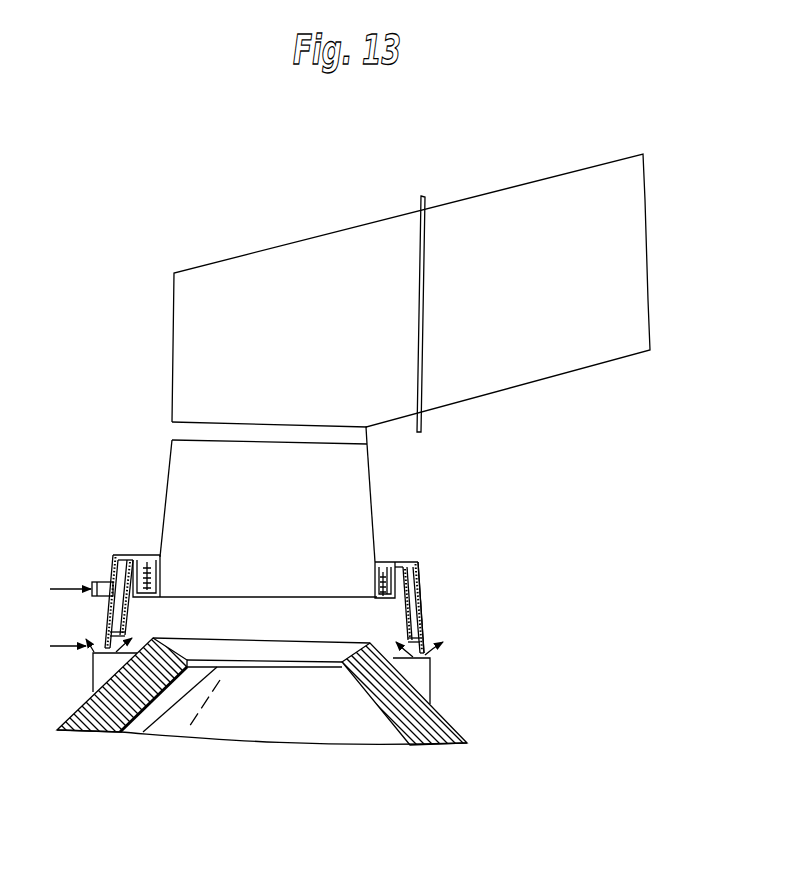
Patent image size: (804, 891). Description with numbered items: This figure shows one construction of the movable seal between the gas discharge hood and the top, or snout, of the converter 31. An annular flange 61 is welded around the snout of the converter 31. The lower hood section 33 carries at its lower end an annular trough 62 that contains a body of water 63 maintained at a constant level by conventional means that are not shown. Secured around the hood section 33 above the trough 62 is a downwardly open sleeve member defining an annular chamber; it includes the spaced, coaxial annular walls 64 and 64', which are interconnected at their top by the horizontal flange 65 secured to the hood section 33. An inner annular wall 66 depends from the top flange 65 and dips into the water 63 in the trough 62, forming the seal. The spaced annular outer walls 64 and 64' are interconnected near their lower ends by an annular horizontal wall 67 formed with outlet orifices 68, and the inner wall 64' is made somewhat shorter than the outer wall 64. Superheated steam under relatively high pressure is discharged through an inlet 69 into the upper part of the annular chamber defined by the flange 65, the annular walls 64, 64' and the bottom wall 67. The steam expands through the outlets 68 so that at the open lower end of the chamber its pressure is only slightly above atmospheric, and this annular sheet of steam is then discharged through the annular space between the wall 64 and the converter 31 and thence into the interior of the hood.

The converter snout 31 is at (103, 720).
The lower hood section 33 is at (172, 453).
The annular flange 61 is at (421, 680).
The annular trough 62 is at (384, 600).
The body of water 63 is at (149, 568).
The outer annular wall 64 is at (469, 607).
The inner annular wall 64' is at (164, 601).
The horizontal flange 65 is at (408, 562).
The inner annular wall 66 is at (383, 568).
The annular horizontal wall 67 is at (424, 634).
The outlet orifices 68 is at (112, 632).
The inlet 69 is at (98, 582).